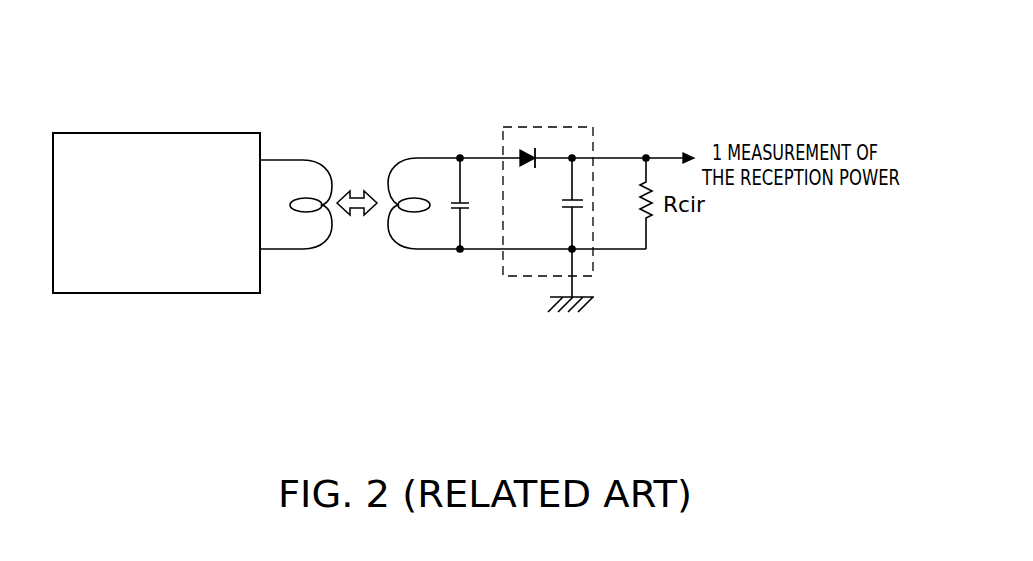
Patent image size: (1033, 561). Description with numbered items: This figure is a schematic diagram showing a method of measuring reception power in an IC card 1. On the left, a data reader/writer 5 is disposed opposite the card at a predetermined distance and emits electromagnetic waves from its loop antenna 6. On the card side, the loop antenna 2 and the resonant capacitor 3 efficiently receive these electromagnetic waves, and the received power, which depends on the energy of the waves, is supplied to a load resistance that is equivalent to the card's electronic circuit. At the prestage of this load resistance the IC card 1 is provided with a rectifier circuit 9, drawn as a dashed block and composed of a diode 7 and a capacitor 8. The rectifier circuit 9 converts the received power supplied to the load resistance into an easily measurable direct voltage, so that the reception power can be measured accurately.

The IC card 1 is at (470, 139).
The loop antenna 2 is at (418, 157).
The resonant capacitor 3 is at (455, 198).
The data reader/writer 5 is at (200, 133).
The loop antenna 6 is at (318, 159).
The diode 7 is at (530, 156).
The capacitor 8 is at (567, 208).
The rectifier circuit 9 is at (573, 127).